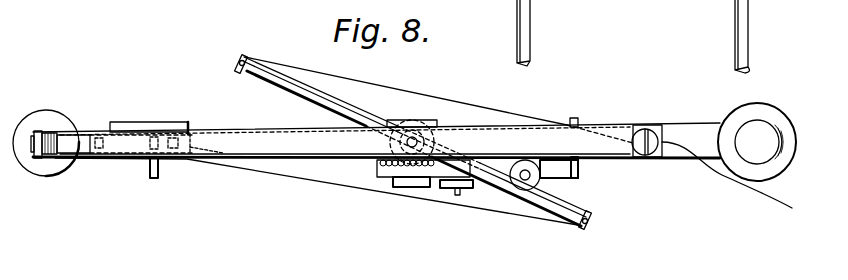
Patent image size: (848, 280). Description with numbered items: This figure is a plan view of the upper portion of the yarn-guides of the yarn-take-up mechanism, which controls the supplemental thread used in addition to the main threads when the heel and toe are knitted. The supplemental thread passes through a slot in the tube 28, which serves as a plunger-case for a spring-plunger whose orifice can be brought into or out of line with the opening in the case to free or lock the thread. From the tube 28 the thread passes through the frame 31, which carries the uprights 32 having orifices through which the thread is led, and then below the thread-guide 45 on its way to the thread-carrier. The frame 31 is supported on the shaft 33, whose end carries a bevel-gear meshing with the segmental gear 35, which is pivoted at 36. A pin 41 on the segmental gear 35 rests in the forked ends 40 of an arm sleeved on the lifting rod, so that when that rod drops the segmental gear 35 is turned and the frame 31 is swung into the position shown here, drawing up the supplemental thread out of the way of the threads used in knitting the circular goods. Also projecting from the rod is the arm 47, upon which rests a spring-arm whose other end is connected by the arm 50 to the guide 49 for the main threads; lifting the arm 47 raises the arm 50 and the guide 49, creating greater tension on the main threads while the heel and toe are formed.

The tube 28 is at (650, 127).
The frame 31 is at (350, 116).
The uprights 32 is at (241, 57).
The shaft 33 is at (414, 140).
The segmental gear 35 is at (392, 182).
The pivot 36 is at (418, 188).
The forked ends 40 is at (477, 185).
The pin 41 is at (455, 195).
The thread-guide 45 is at (191, 128).
The arm 47 is at (568, 178).
The guide 49 is at (43, 135).
The arm 50 is at (72, 137).